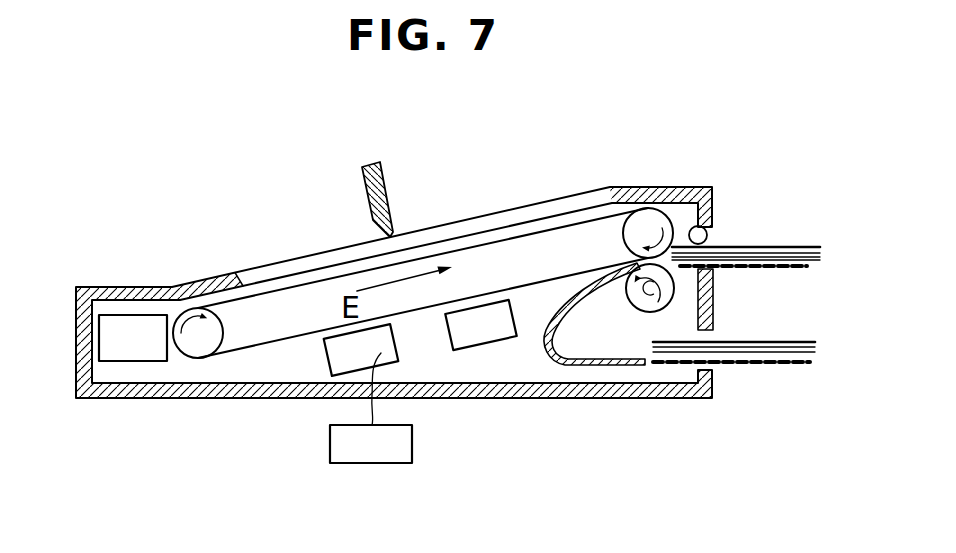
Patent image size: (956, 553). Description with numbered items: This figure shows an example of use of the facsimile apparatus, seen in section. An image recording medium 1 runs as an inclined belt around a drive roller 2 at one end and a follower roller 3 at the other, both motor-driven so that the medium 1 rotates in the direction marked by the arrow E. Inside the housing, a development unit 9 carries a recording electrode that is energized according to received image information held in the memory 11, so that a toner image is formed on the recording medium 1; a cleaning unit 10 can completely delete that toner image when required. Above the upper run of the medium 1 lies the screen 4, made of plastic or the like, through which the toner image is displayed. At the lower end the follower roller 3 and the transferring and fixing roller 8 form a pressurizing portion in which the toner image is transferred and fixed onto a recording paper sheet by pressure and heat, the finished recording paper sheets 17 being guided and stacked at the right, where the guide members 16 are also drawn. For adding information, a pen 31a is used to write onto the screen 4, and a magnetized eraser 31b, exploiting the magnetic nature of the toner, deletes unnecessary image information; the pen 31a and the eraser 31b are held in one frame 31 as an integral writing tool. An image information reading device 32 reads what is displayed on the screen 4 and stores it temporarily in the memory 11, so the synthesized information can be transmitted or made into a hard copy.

The image recording medium 1 is at (503, 243).
The drive roller 2 is at (216, 328).
The follower roller 3 is at (627, 241).
The screen 4 is at (566, 205).
The transferring and fixing roller 8 is at (631, 294).
The development unit 9 is at (133, 338).
The cleaning unit 10 is at (481, 326).
The memory 11 is at (361, 374).
The upper guide rail 16 is at (803, 245).
The recording paper sheets 17 is at (811, 340).
The frame 31 is at (467, 170).
The pen 31a is at (391, 234).
The magnetized eraser 31b is at (382, 168).
The image information reading device 32 is at (412, 446).